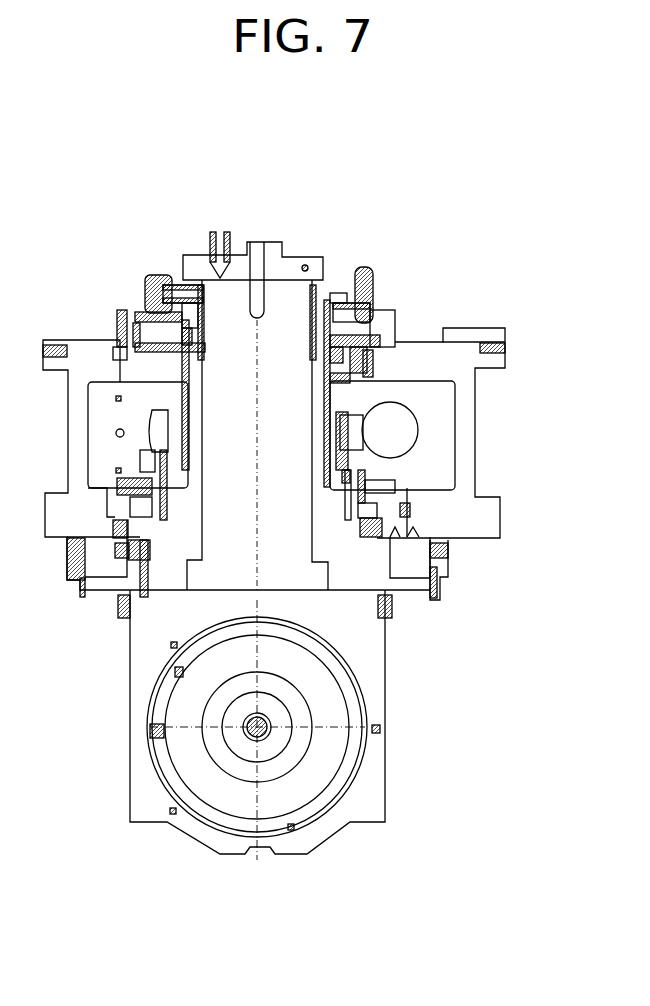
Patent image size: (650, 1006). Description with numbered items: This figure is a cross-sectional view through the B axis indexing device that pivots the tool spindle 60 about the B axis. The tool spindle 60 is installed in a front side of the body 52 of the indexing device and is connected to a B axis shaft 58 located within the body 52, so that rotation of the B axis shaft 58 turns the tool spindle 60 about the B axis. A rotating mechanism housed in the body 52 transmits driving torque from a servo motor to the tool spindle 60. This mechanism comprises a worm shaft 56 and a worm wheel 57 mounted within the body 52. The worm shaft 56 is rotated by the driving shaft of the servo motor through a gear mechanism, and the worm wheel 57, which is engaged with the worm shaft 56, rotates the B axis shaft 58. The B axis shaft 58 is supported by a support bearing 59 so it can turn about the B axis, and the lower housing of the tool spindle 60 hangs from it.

The body 52 is at (475, 450).
The worm shaft 56 is at (392, 412).
The worm wheel 57 is at (352, 412).
The B axis shaft 58 is at (278, 327).
The support bearing 59 is at (412, 490).
The tool spindle 60 is at (129, 800).